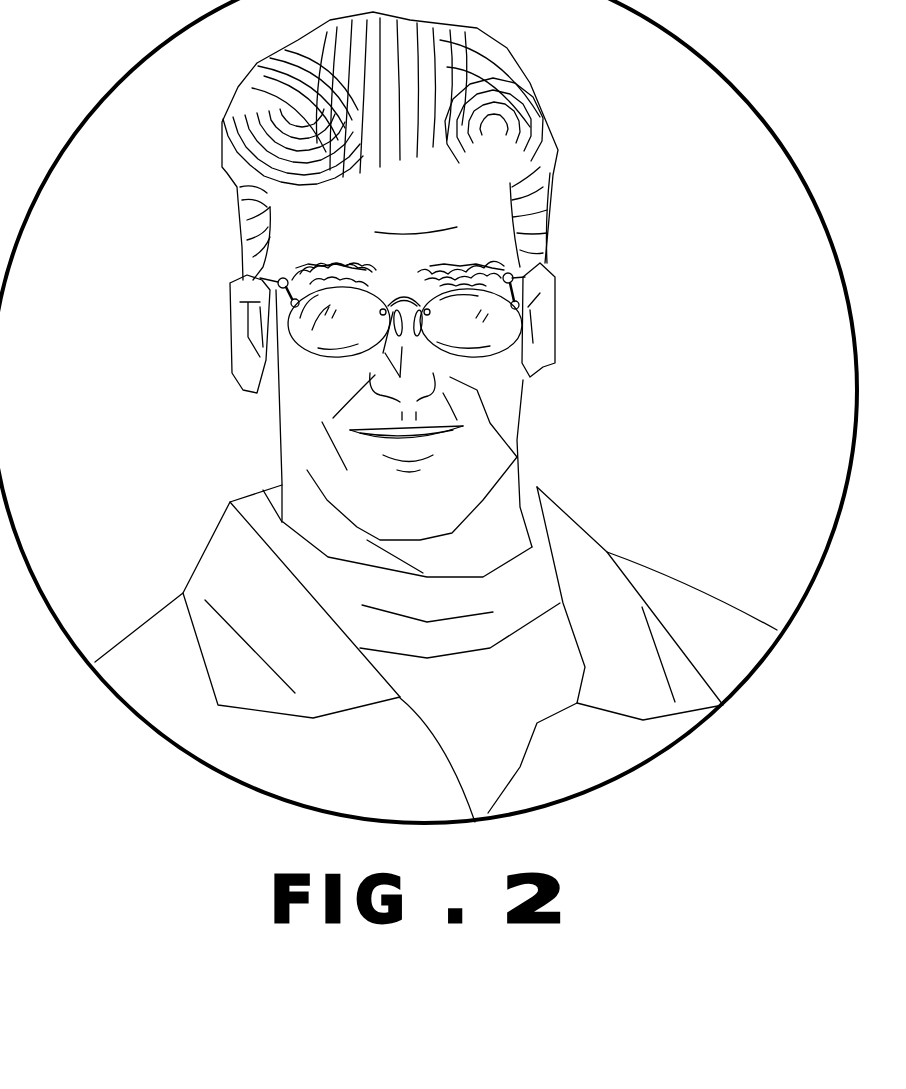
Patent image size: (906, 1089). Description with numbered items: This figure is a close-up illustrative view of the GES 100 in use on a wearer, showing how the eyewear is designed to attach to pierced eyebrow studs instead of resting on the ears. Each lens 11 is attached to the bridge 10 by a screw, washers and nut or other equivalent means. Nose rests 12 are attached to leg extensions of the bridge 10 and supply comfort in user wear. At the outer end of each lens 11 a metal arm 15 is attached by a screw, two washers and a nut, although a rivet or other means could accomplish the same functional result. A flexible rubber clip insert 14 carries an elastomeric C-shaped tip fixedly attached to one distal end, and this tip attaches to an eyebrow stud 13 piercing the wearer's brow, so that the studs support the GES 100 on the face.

The GES 100 is at (409, 319).
The bridge 10 is at (407, 300).
The lens 11 is at (505, 333).
The nose rests 12 is at (393, 310).
The eyebrow stud 13 is at (283, 283).
The flexible rubber clip insert 14 is at (295, 304).
The metal arm 15 is at (288, 293).